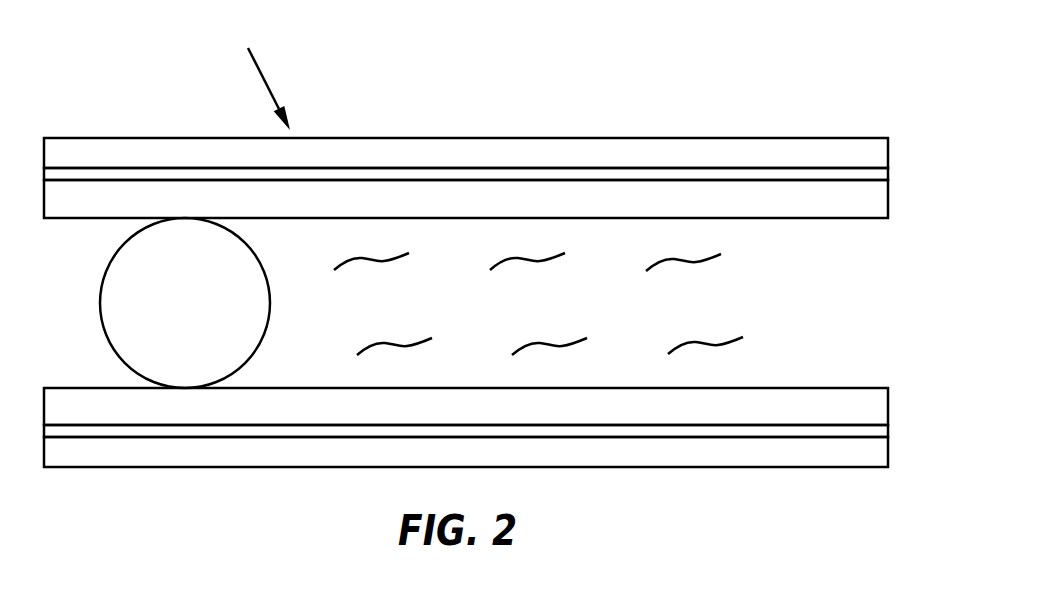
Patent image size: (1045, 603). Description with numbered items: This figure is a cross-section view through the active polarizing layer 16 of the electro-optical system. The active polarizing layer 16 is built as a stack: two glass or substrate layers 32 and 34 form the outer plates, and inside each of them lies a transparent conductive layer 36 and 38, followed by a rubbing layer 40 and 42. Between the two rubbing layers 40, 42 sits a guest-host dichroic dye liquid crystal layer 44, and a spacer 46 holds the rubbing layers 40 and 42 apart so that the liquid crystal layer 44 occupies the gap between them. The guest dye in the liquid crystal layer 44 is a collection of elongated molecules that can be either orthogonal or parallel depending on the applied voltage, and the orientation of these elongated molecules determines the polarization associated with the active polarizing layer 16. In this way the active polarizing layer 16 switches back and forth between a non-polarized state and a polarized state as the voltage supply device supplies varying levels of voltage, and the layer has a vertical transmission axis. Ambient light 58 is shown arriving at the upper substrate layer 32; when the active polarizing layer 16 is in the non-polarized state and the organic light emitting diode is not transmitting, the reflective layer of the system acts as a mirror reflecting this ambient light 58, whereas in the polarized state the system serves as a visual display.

The active polarizing layer 16 is at (627, 70).
The glass or substrate layer 32 is at (849, 148).
The glass or substrate layer 34 is at (871, 455).
The transparent conductive layer 36 is at (878, 175).
The transparent conductive layer 38 is at (878, 430).
The rubbing layer 40 is at (851, 205).
The rubbing layer 42 is at (870, 400).
The guest-host dichroic dye liquid crystal layer 44 is at (693, 262).
The spacer 46 is at (100, 325).
The ambient light 58 is at (271, 90).